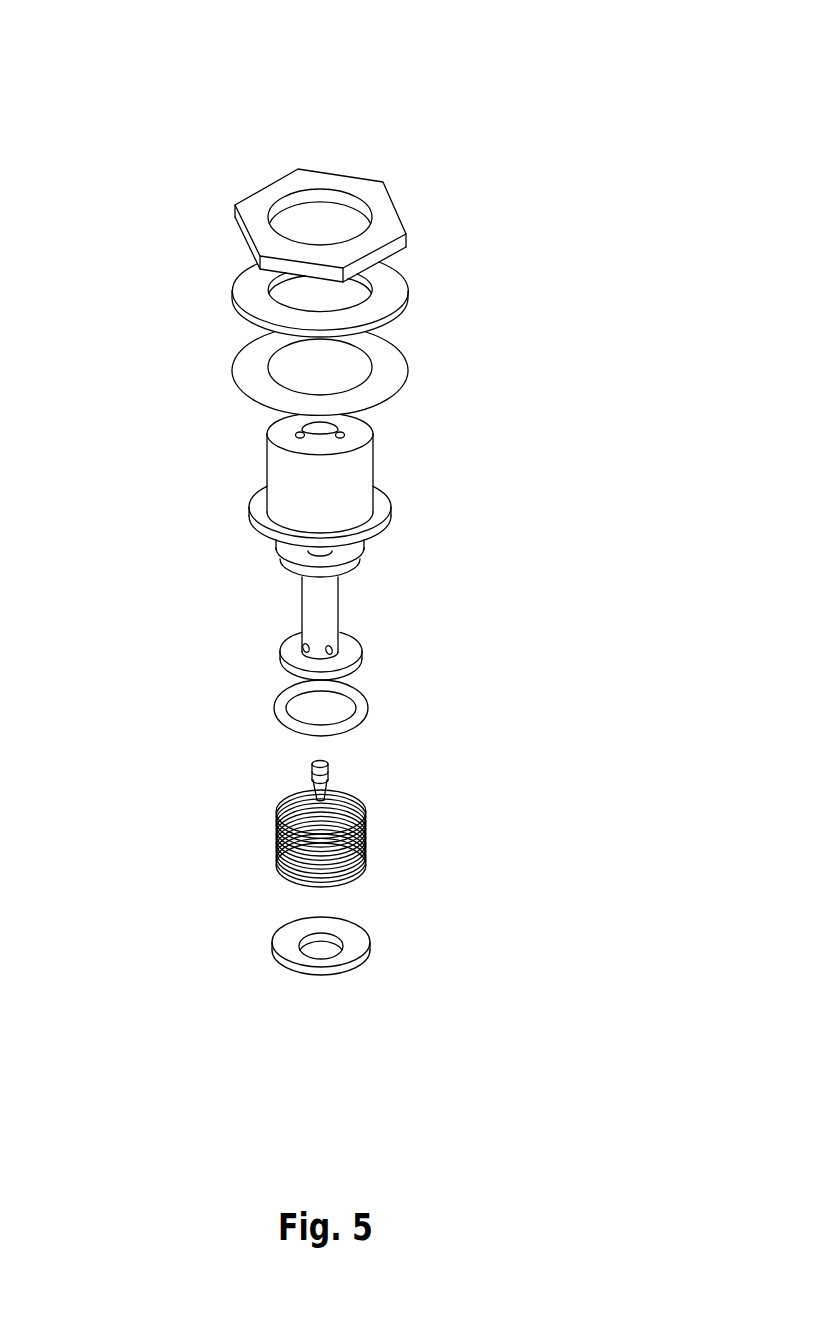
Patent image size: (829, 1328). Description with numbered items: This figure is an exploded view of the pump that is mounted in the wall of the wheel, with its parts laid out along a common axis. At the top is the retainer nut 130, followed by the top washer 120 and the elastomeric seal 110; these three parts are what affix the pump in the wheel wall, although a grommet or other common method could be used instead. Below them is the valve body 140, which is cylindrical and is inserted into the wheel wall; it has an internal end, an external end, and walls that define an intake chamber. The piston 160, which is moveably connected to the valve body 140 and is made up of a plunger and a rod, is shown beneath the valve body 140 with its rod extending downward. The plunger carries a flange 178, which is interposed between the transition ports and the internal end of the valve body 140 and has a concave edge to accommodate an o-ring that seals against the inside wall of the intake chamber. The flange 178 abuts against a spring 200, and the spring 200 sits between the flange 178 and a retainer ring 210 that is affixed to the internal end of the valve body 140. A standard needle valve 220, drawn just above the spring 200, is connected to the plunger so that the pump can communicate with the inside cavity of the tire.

The retainer nut 130 is at (267, 183).
The top washer 120 is at (233, 288).
The elastomeric seal 110 is at (233, 368).
The valve body 140 is at (267, 463).
The piston 160 is at (340, 610).
The flange 178 is at (280, 652).
The needle valve 220 is at (330, 768).
The spring 200 is at (275, 837).
The retainer ring 210 is at (305, 982).